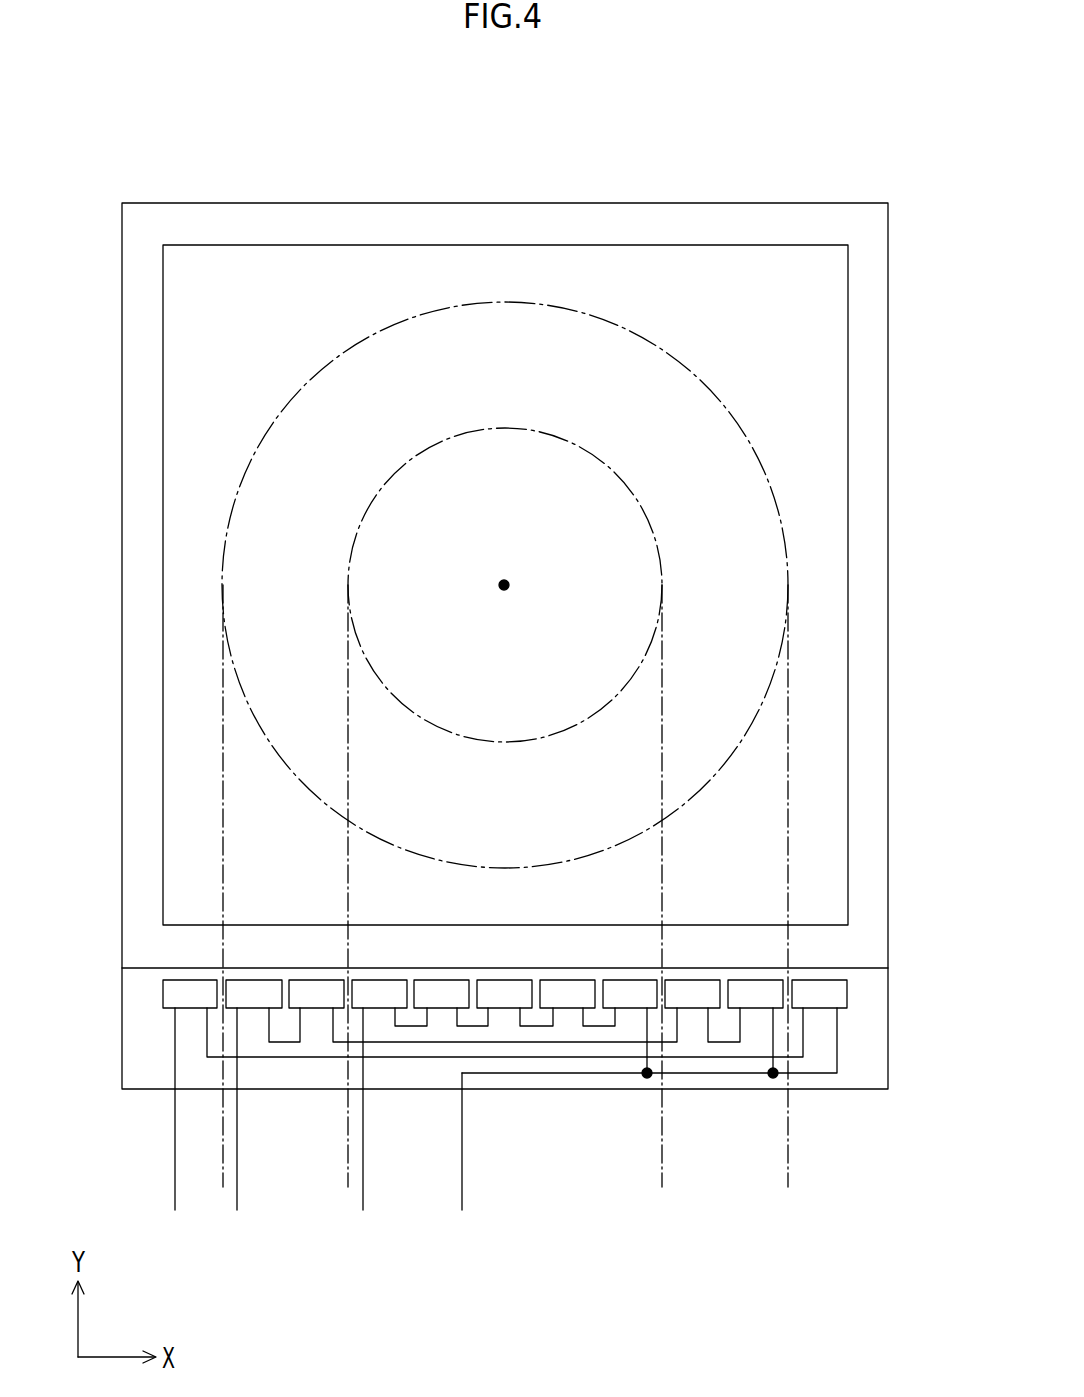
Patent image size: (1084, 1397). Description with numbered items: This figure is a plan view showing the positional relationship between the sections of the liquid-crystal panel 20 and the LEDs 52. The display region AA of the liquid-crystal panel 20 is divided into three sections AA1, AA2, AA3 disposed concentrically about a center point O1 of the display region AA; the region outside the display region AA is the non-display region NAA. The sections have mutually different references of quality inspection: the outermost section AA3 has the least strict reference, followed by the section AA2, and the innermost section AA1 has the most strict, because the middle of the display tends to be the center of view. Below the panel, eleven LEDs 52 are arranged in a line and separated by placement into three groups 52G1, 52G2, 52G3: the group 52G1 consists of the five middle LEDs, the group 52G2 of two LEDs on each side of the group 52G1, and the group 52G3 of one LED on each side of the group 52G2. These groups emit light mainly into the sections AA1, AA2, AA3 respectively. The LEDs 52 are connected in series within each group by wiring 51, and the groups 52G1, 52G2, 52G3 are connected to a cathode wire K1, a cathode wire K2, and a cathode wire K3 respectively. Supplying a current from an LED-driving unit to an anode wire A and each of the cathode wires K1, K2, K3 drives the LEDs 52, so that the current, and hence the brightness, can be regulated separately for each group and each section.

The liquid-crystal panel 20 is at (867, 225).
The non-active area NAA is at (414, 225).
The display region AA is at (712, 141).
The section AA1 is at (540, 483).
The section AA2 is at (620, 380).
The section AA3 is at (687, 293).
The center point O1 is at (523, 587).
The LEDs 52 is at (554, 968).
The group 52G1 is at (657, 975).
The group 52G2 is at (344, 975).
The group 52G3 is at (217, 975).
The wiring 51 is at (873, 1067).
The cathode wire K1 is at (360, 1198).
The cathode wire K2 is at (234, 1198).
The cathode wire K3 is at (172, 1198).
The anode wire A is at (459, 1198).